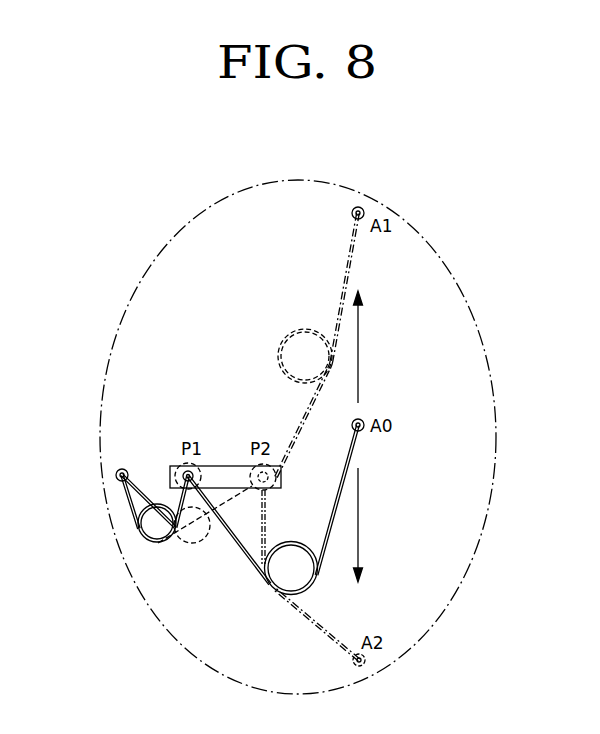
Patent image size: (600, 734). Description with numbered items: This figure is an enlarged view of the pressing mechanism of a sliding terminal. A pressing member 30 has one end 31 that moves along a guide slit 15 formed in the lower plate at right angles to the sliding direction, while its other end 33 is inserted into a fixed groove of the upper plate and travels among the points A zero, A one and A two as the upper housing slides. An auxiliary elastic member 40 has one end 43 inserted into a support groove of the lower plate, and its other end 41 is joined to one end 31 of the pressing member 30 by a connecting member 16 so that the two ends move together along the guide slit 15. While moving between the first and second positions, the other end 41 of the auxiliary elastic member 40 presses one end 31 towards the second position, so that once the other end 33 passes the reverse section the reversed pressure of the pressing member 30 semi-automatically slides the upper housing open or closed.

The guide slit 15 is at (220, 464).
The connecting member 16 is at (180, 465).
The pressing member 30 is at (354, 450).
The one end of the pressing member 31 is at (181, 467).
The other end of the pressing member 33 is at (362, 212).
The auxiliary elastic member 40 is at (140, 508).
The other end of the auxiliary elastic member 41 is at (178, 465).
The one end of the auxiliary elastic member 43 is at (117, 477).